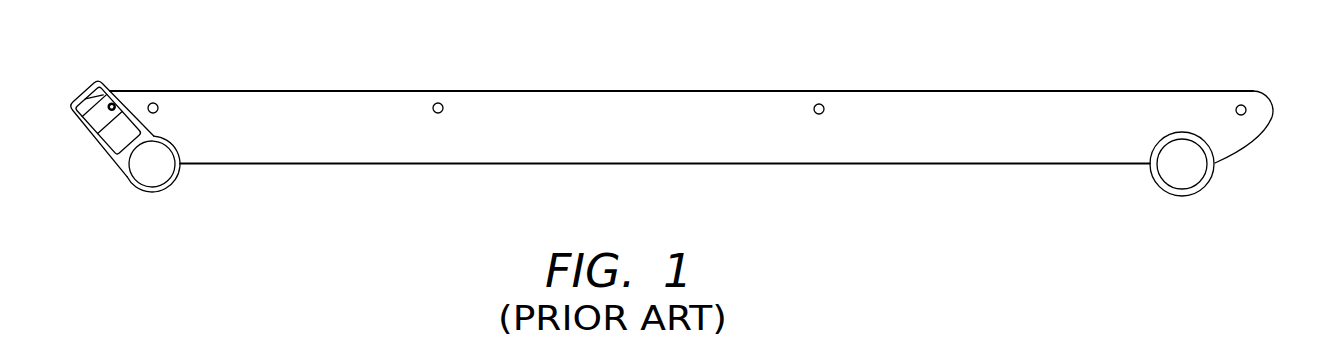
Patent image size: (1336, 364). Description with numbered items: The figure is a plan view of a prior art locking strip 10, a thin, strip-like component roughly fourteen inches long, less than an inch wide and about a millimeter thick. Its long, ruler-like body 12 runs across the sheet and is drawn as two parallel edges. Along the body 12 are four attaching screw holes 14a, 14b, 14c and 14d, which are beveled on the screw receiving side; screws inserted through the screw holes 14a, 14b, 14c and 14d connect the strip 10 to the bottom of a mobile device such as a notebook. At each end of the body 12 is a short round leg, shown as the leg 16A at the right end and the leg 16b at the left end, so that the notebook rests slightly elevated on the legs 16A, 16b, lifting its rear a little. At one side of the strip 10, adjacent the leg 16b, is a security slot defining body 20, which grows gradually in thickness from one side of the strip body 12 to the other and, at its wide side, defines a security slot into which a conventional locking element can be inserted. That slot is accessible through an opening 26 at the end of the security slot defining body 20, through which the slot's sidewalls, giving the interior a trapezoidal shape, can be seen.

The locking strip 10 is at (741, 227).
The body 12 is at (318, 148).
The attaching screw hole 14a is at (1241, 105).
The attaching screw hole 14b is at (819, 104).
The attaching screw hole 14c is at (438, 103).
The attaching screw hole 14d is at (153, 103).
The short leg 16A is at (1185, 177).
The short leg 16b is at (155, 172).
The security slot defining body 20 is at (100, 140).
The opening 26 is at (82, 93).